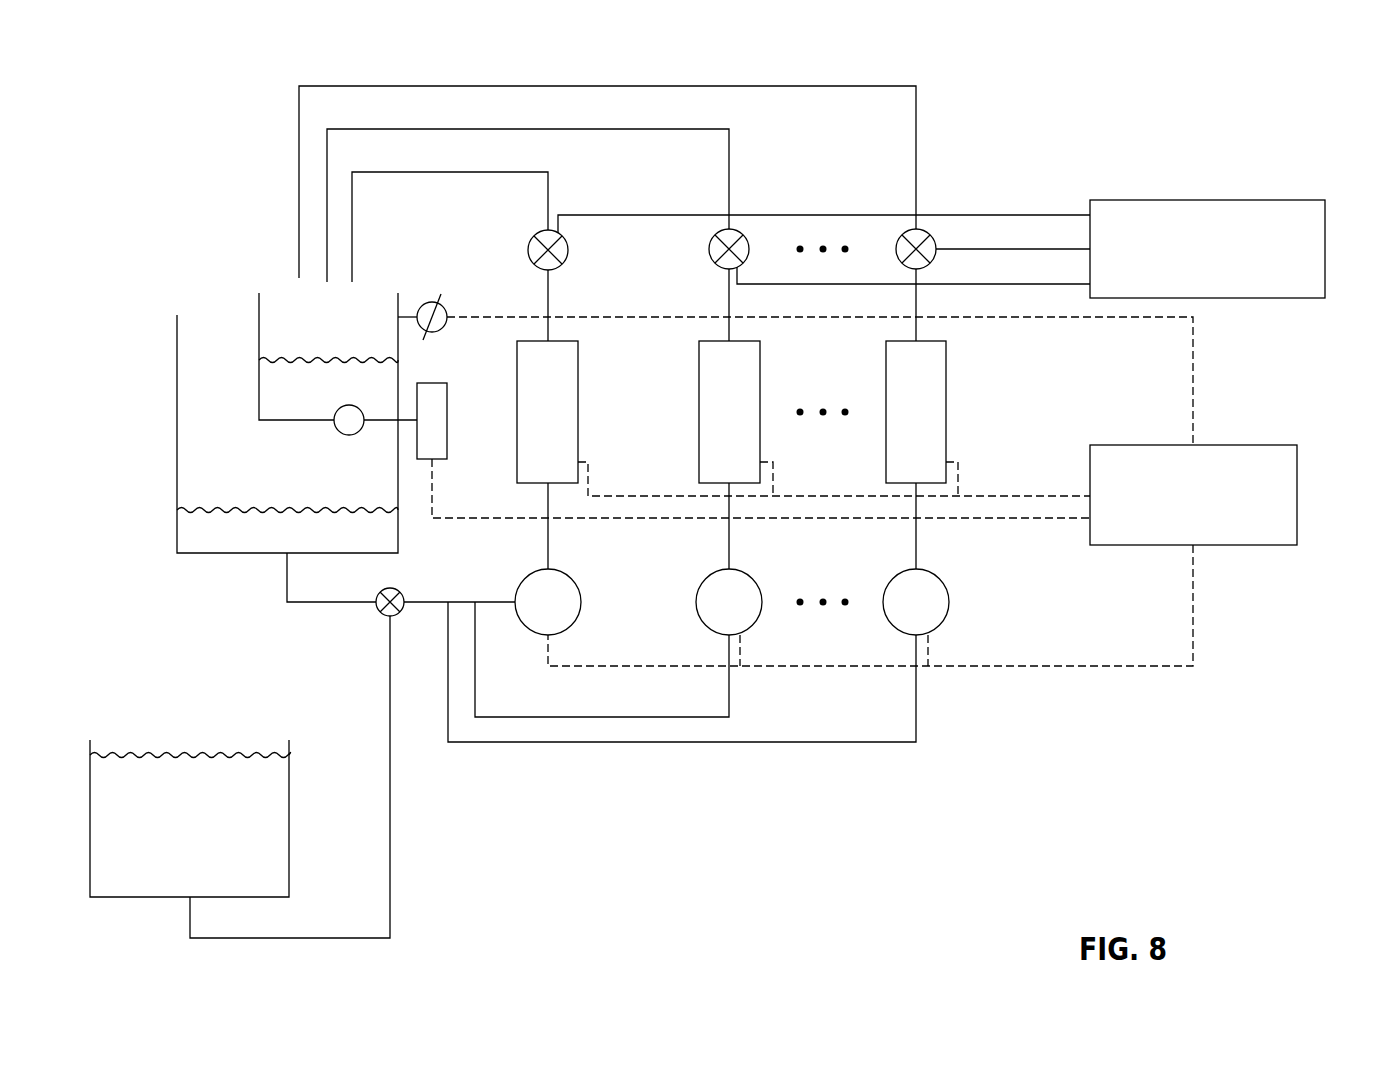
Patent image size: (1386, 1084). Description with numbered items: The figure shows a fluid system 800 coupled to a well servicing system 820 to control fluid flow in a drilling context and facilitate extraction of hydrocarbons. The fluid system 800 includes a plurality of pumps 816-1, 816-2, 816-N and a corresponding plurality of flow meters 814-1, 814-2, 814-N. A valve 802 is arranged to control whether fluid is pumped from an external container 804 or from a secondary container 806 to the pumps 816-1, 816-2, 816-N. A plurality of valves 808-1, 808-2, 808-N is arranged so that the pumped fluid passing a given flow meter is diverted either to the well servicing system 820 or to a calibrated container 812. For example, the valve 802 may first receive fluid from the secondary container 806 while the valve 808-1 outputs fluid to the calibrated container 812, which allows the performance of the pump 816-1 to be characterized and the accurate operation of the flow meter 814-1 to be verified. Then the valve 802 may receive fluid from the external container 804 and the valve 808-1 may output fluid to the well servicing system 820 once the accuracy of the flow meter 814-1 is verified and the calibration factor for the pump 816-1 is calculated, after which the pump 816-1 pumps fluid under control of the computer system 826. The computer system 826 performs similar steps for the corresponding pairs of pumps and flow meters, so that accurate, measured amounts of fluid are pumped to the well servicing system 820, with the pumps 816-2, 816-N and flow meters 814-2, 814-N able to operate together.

The fluid system 800 is at (1290, 74).
The valve 802 is at (396, 590).
The external container 804 is at (289, 848).
The secondary container 806 is at (177, 473).
The valve 808-1 is at (528, 250).
The valve 808-2 is at (709, 249).
The valve 808-N is at (926, 232).
The calibrated container 812 is at (290, 421).
The flow meter 814-1 is at (578, 432).
The flow meter 814-2 is at (760, 432).
The flow meter 814-N is at (946, 432).
The pump 816-1 is at (558, 572).
The pump 816-2 is at (738, 572).
The pump 816-N is at (925, 572).
The well servicing system 820 is at (1255, 298).
The computer system 826 is at (1225, 545).